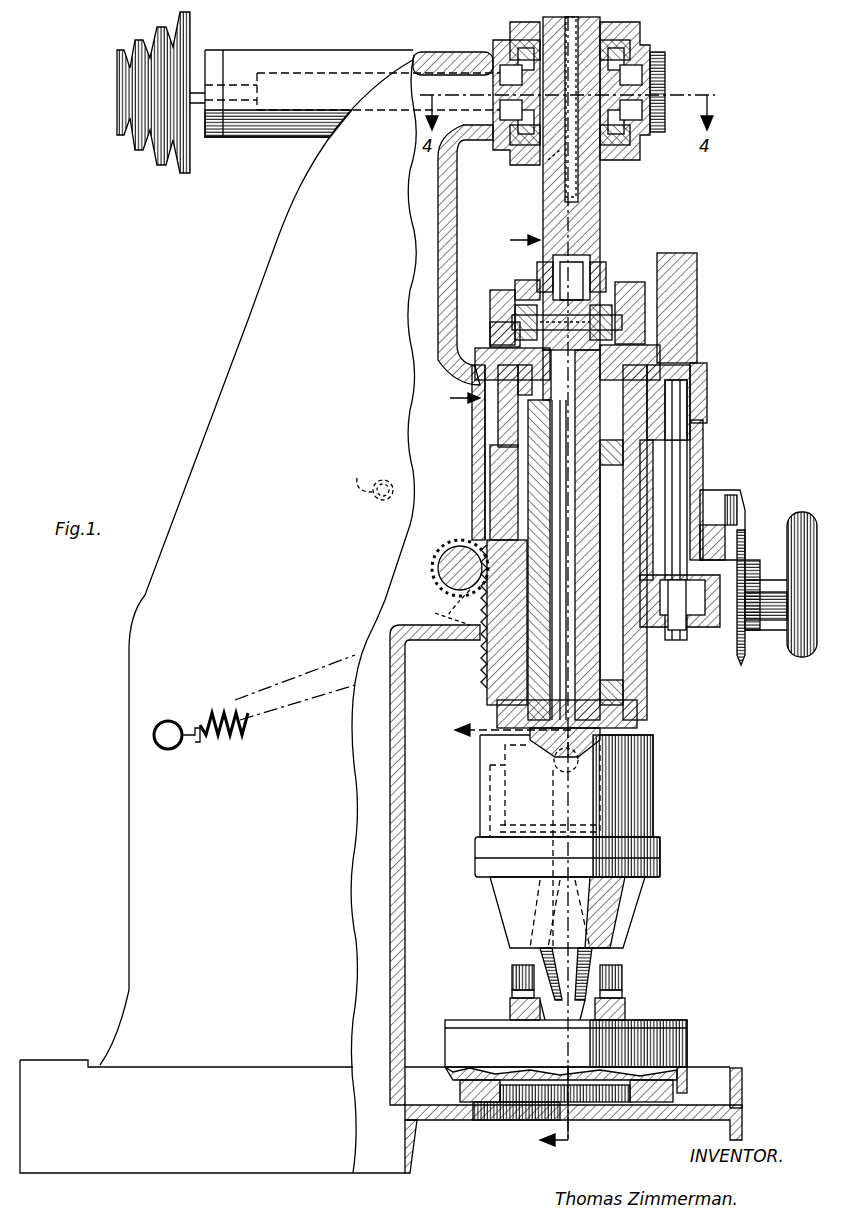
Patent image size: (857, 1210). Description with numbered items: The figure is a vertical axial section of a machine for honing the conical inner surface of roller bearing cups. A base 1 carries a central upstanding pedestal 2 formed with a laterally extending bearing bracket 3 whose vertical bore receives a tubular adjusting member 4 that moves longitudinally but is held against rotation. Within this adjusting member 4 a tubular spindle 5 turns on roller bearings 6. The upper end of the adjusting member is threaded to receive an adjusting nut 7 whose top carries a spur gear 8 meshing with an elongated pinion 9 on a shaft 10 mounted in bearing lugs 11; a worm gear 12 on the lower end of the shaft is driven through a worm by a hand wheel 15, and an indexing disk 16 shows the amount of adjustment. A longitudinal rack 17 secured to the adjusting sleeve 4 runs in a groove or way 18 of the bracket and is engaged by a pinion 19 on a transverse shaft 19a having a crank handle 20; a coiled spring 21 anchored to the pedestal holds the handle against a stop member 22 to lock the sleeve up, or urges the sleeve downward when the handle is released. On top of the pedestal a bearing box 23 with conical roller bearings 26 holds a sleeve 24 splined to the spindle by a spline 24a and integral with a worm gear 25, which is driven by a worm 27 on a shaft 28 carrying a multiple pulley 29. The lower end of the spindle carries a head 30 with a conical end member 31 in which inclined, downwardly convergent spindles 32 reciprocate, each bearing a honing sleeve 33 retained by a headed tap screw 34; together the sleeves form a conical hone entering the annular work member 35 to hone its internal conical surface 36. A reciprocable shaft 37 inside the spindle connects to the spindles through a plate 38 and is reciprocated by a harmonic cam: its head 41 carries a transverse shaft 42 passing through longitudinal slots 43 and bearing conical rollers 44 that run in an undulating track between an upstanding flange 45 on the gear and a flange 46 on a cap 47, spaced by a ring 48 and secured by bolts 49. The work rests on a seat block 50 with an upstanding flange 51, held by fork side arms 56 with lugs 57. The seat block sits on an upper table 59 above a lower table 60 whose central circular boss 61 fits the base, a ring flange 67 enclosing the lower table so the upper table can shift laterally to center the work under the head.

The base 1 is at (170, 1170).
The pedestal 2 is at (381, 612).
The bearing bracket 3 is at (670, 445).
The tubular adjusting member 4 is at (478, 410).
The tubular spindle 5 is at (590, 210).
The roller bearings 6 is at (612, 480).
The adjusting nut 7 is at (690, 386).
The spur gear 8 is at (475, 360).
The elongated pinion 9 is at (718, 305).
The shaft 10 is at (690, 455).
The bearing lugs 11 is at (707, 413).
The worm gear 12 is at (703, 627).
The hand wheel 15 is at (800, 515).
The indexing disk 16 is at (745, 650).
The longitudinal rack 17 is at (480, 670).
The groove or way 18 is at (492, 440).
The pinion 19 is at (455, 548).
The transverse shaft 19a is at (433, 598).
The crank handle 20 is at (442, 613).
The coiled spring 21 is at (230, 705).
The stop member 22 is at (368, 480).
The bearing box 23 is at (640, 62).
The sleeve 24 is at (530, 160).
The spline 24a is at (590, 176).
The worm gear 25 is at (645, 100).
The conical roller bearings 26 is at (648, 80).
The worm 27 is at (548, 185).
The shaft 28 is at (340, 73).
The multiple pulley 29 is at (178, 170).
The head 30 is at (640, 812).
The conical end member 31 is at (510, 918).
The spindles 32 is at (530, 900).
The honing sleeve 33 is at (552, 1020).
The headed tap screw 34 is at (580, 1020).
The annular work member 35 is at (612, 982).
The internal conical surface 36 is at (540, 962).
The reciprocable shaft 37 is at (565, 552).
The plate 38 is at (540, 832).
The head of the shaft 41 is at (590, 280).
The transverse shaft 42 is at (567, 322).
The longitudinal slots 43 is at (537, 272).
The conical rollers 44 is at (490, 308).
The upstanding flange 45 is at (640, 340).
The flange 46 is at (512, 285).
The cap 47 is at (620, 262).
The ring 48 is at (490, 330).
The bolts 49 is at (640, 262).
The seat block 50 is at (625, 1006).
The upstanding flange 51 is at (510, 1008).
The side arms 56 is at (512, 992).
The lugs 57 is at (512, 970).
The upper table 59 is at (687, 1025).
The lower table 60 is at (687, 1044).
The central circular boss 61 is at (605, 1100).
The ring flange 67 is at (687, 1088).